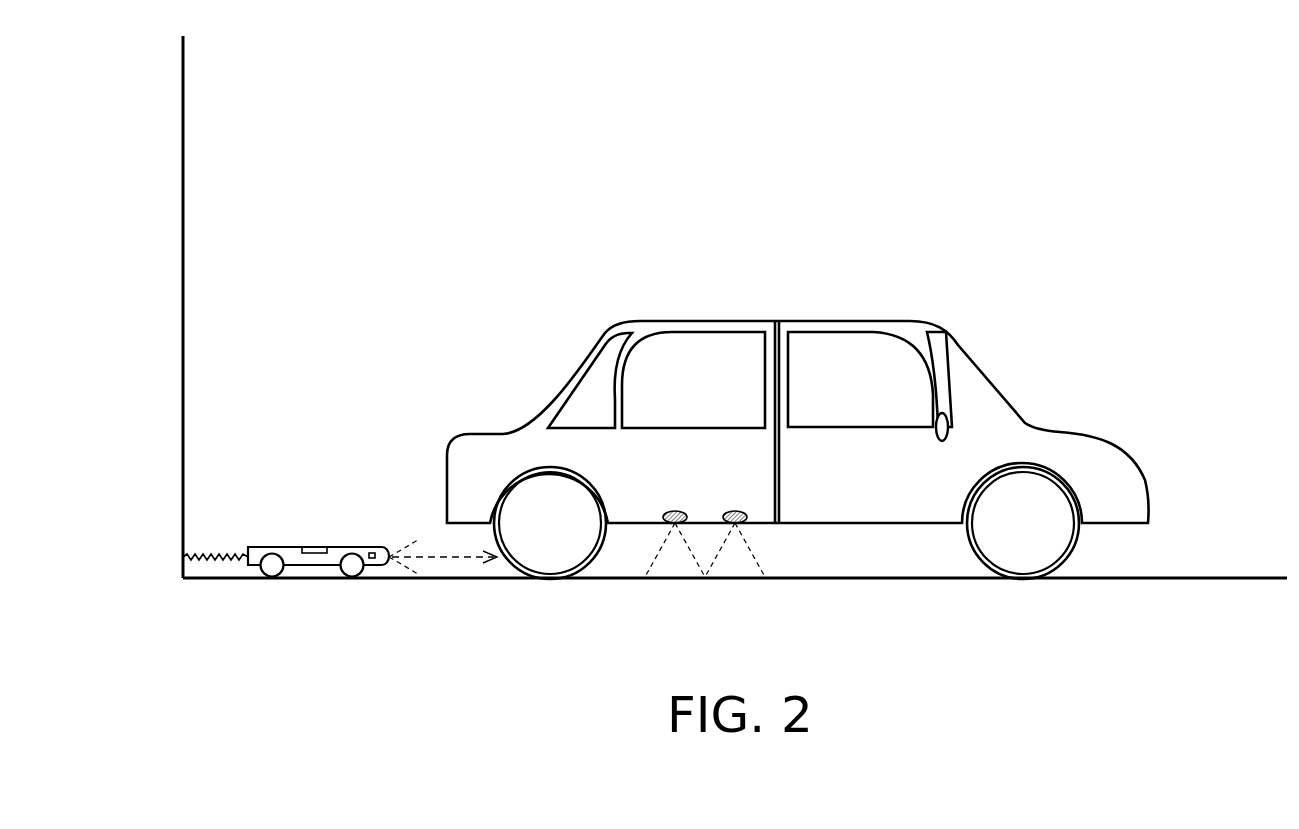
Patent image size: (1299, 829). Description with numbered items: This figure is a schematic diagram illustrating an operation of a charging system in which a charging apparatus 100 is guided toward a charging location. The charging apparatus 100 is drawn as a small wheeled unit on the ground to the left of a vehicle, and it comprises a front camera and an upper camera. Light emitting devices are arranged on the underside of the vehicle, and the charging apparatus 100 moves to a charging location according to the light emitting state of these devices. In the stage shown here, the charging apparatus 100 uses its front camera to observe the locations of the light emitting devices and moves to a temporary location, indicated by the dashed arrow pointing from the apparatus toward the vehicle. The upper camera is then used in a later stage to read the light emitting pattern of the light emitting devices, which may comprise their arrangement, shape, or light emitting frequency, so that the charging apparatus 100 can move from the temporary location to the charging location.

The charging apparatus 100 is at (340, 610).